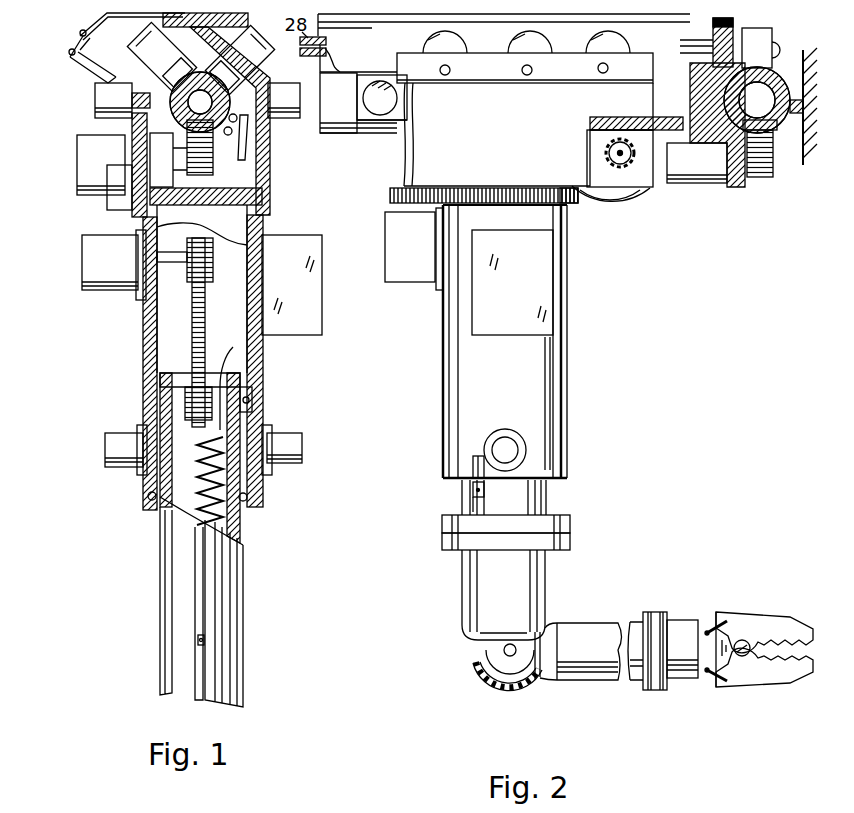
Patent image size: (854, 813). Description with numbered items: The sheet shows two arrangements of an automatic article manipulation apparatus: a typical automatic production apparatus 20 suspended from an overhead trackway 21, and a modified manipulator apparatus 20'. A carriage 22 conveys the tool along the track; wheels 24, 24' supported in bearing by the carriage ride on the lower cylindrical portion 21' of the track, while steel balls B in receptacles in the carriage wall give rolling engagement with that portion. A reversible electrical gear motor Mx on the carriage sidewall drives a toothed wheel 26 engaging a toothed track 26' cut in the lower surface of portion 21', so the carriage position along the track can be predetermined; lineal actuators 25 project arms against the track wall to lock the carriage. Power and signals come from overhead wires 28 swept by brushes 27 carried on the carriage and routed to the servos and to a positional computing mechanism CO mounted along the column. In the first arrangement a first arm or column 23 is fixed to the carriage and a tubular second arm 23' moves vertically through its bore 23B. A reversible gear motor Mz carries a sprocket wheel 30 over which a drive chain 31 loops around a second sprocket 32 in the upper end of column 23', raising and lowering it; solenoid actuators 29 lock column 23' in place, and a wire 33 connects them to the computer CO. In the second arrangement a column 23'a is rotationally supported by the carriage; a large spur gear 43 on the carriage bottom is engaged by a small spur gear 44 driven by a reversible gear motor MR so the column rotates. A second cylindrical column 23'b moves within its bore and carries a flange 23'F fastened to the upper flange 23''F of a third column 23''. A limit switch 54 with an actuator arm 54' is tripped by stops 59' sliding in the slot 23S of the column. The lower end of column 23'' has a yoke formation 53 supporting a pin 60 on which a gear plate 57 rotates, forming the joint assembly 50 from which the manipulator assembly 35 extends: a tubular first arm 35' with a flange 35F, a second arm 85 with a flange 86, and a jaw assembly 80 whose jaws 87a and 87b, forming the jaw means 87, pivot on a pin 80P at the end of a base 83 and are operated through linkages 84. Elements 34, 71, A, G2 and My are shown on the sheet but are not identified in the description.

In FIG. 1, the automatic production apparatus 20 is at (143, 544).
In FIG. 2, the automatic article manipulator apparatus 20' is at (622, 377).
In FIG. 1, the overhead support or trackway 21 is at (214, 23).
In FIG. 2, the overhead support or trackway 21 is at (350, 53).
In FIG. 2, the lower cylindrical portion of overhead track 21' is at (363, 119).
In FIG. 1, the carriage 22 is at (133, 67).
In FIG. 2, the carriage 22 is at (487, 162).
In FIG. 1, the first arm or column 23 is at (227, 315).
In FIG. 1, the second arm 23' is at (140, 601).
In FIG. 2, the third column 23'' is at (538, 591).
In FIG. 2, the column 23'a is at (479, 341).
In FIG. 2, the second cylindrical column 23'b is at (542, 497).
In FIG. 2, the flange 23'F is at (544, 519).
In FIG. 2, the upper flange 23''F is at (550, 544).
In FIG. 1, the bore 23B is at (172, 322).
In FIG. 1, the elongated channel or slot 23S is at (198, 668).
In FIG. 2, the elongated channel or slot 23S is at (480, 512).
In FIG. 1, the wheel 24 is at (245, 59).
In FIG. 2, the wheel 24 is at (526, 74).
In FIG. 1, the wheel 24' is at (158, 56).
In FIG. 1, the lineal actuators or servos 25 is at (298, 118).
In FIG. 2, the lineal actuators or servos 25 is at (377, 100).
In FIG. 1, the toothed wheel 26 is at (248, 155).
In FIG. 2, the toothed wheel 26 is at (636, 171).
In FIG. 2, the toothed track 26' is at (711, 171).
In FIG. 1, the electrical brushes or sliding elements 27 is at (75, 65).
In FIG. 1, the overhead wires 28 is at (80, 43).
In FIG. 1, the lineal actuators or solenoids 29 is at (290, 452).
In FIG. 2, the lineal actuators or solenoids 29 is at (513, 452).
In FIG. 1, the pulley or sprocket wheel 30 is at (187, 272).
In FIG. 1, the drive belt or chain 31 is at (190, 343).
In FIG. 1, the second pulley or sprocket 32 is at (185, 400).
In FIG. 1, the wire 33 is at (252, 408).
In FIG. 1, the inner sleeve 34 is at (240, 510).
In FIG. 2, the manipulator assembly 35 is at (589, 635).
In FIG. 2, the first arm 35' is at (558, 662).
In FIG. 2, the flange 35F is at (652, 612).
In FIG. 2, the large spur gear 43 is at (557, 188).
In FIG. 2, the small spur gear 44 is at (392, 196).
In FIG. 2, the joint assembly 50 is at (468, 692).
In FIG. 2, the yoke formation 53 is at (500, 650).
In FIG. 2, the limit switch 54 is at (442, 478).
In FIG. 2, the actuator arm 54' is at (447, 500).
In FIG. 2, the gear plate 57 is at (537, 662).
In FIG. 1, the stop 59' is at (151, 636).
In FIG. 2, the stop 59' is at (437, 515).
In FIG. 2, the pin or shaft 60 is at (506, 654).
In FIG. 1, the control unit 71 is at (322, 325).
In FIG. 2, the jaw assembly 80 is at (746, 613).
In FIG. 2, the pin 80P is at (746, 645).
In FIG. 2, the base 83 is at (707, 650).
In FIG. 2, the linkages 84 is at (720, 672).
In FIG. 2, the second arm 85 is at (682, 620).
In FIG. 2, the flange 86 is at (663, 615).
In FIG. 2, the jaw means 87 is at (750, 687).
In FIG. 2, the jaw 87a is at (790, 630).
In FIG. 2, the jaw 87b is at (782, 672).
In FIG. 2, the direction of motion A is at (590, 273).
In FIG. 1, the steel balls B is at (258, 497).
In FIG. 1, the positional computing mechanism CO is at (322, 300).
In FIG. 2, the positional computing mechanism CO is at (545, 298).
In FIG. 2, the toothed gear segment G2 is at (492, 682).
In FIG. 2, the reversible gear motor MR is at (398, 261).
In FIG. 1, the reversible electrical gear motor Mx is at (90, 167).
In FIG. 2, the reversible electrical gear motor Mx is at (610, 197).
In FIG. 2, the y-axis motor My is at (683, 186).
In FIG. 1, the reversible gear motor Mz is at (93, 263).